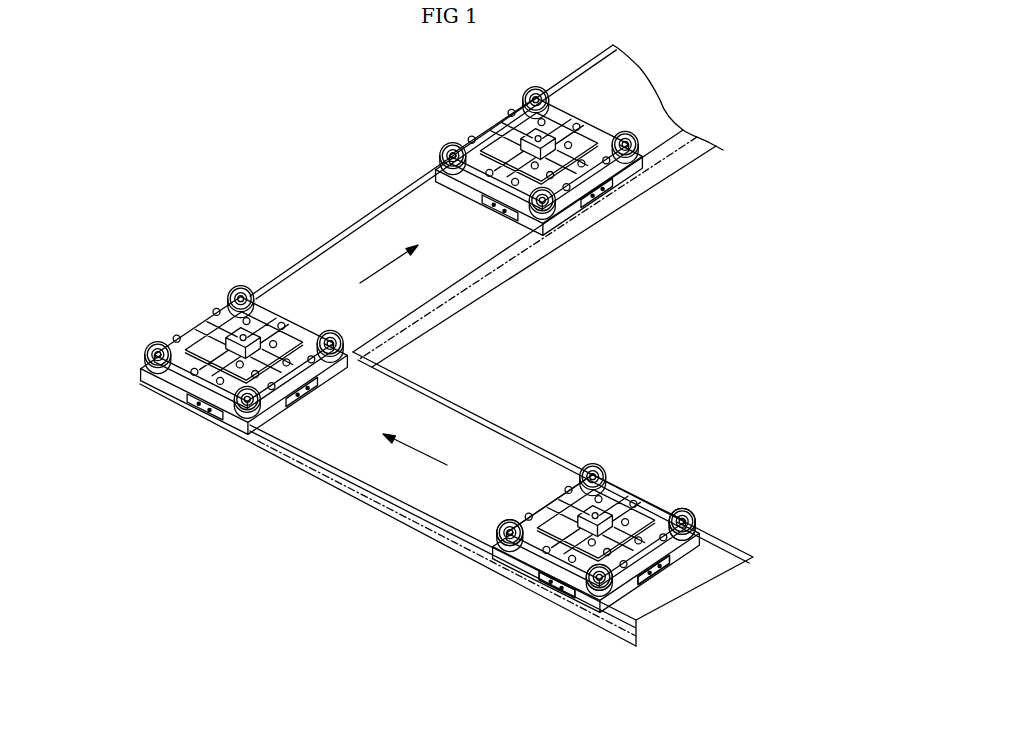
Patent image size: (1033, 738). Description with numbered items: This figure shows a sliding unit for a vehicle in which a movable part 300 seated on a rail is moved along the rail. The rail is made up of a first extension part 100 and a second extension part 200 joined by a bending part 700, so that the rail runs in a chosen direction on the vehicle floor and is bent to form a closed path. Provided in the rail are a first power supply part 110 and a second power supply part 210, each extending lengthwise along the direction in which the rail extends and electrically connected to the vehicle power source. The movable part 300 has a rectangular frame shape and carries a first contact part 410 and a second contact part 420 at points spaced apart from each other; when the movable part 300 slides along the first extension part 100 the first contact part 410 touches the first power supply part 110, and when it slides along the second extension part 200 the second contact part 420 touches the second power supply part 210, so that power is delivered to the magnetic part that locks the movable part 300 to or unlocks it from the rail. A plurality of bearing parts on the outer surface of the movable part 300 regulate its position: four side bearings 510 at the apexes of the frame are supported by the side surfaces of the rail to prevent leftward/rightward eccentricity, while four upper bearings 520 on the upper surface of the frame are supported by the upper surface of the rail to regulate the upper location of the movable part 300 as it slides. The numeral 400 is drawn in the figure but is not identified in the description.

The first extension part 100 is at (401, 476).
The first power supply part 110 is at (282, 457).
The second extension part 200 is at (397, 240).
The second power supply part 210 is at (290, 265).
The movable part 300 is at (477, 124).
The drive unit 400 is at (643, 583).
The first contact part 410 is at (553, 583).
The second contact part 420 is at (540, 494).
The side bearing 510 is at (500, 543).
The upper bearing 520 is at (665, 548).
The bending part 700 is at (189, 306).